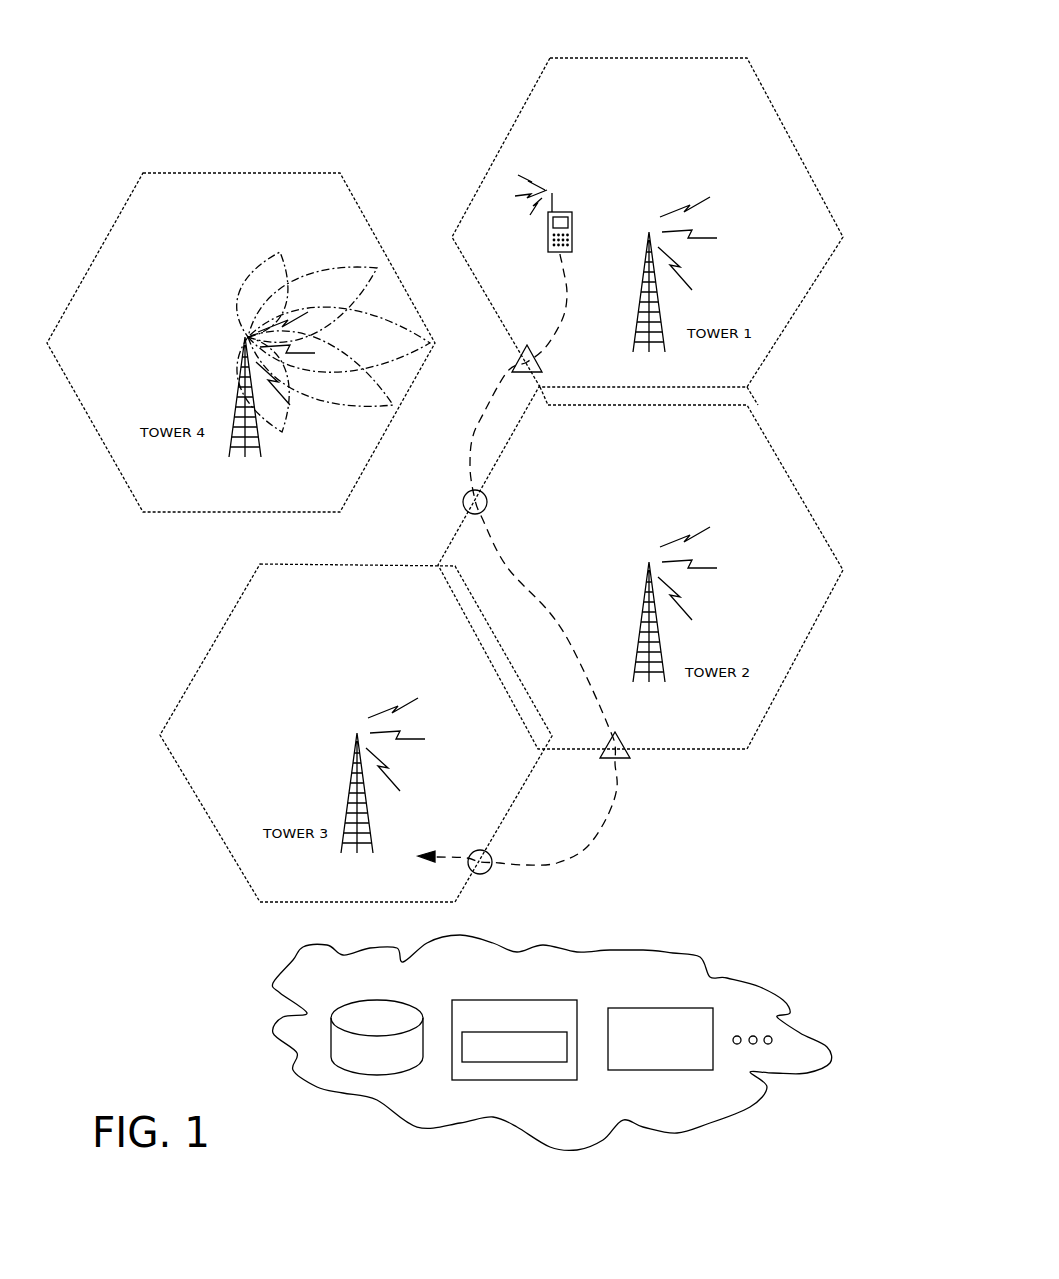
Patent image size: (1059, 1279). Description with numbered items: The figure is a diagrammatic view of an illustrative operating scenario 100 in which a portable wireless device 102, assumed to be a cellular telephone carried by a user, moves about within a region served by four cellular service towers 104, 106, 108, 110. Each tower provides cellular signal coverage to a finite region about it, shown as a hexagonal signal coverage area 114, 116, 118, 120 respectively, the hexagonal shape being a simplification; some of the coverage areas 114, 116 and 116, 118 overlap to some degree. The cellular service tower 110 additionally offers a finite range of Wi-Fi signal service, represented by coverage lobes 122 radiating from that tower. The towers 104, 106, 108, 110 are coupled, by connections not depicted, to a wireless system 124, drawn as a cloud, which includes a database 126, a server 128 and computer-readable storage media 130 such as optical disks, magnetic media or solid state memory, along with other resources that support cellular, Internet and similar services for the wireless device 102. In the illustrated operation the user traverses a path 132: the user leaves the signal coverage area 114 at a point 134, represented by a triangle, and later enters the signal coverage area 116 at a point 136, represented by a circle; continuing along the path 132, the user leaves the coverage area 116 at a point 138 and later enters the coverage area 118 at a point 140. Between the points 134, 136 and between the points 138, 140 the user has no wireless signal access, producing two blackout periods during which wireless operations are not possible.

The operating scenario 100 is at (458, 27).
The wireless device 102 is at (573, 223).
The cellular service tower 104 is at (634, 332).
The cellular service tower 106 is at (638, 618).
The cellular service tower 108 is at (348, 785).
The cellular service tower 110 is at (234, 394).
The signal coverage area 114 is at (776, 103).
The signal coverage area 116 is at (789, 471).
The signal coverage area 118 is at (216, 828).
The signal coverage area 120 is at (118, 467).
The coverage lobes 122 is at (266, 290).
The wireless system 124 is at (677, 953).
The database 126 is at (387, 1070).
The server 128 is at (525, 1080).
The computer-readable storage media 130 is at (675, 1070).
The path 132 is at (508, 568).
The point 134 is at (515, 362).
The point 136 is at (463, 501).
The point 138 is at (630, 759).
The point 140 is at (484, 872).